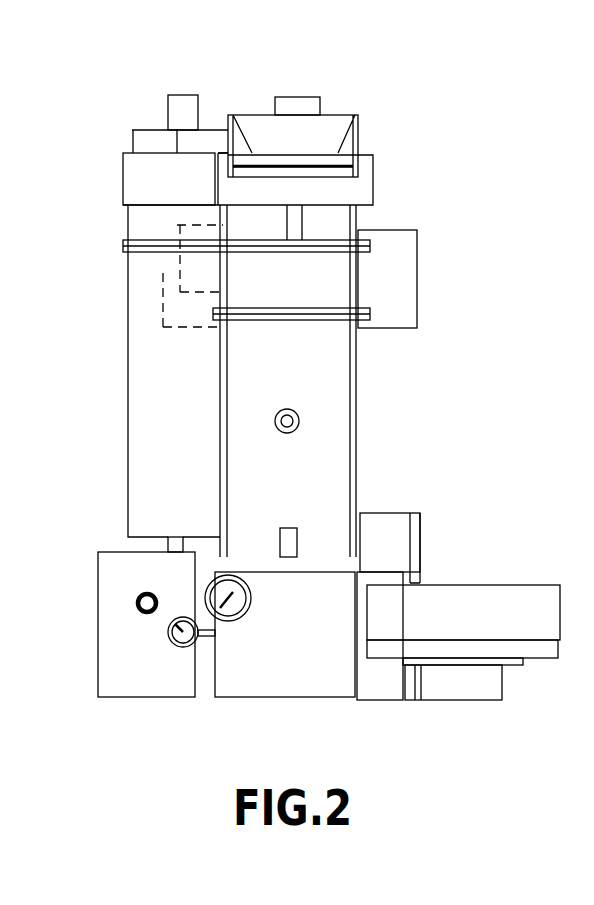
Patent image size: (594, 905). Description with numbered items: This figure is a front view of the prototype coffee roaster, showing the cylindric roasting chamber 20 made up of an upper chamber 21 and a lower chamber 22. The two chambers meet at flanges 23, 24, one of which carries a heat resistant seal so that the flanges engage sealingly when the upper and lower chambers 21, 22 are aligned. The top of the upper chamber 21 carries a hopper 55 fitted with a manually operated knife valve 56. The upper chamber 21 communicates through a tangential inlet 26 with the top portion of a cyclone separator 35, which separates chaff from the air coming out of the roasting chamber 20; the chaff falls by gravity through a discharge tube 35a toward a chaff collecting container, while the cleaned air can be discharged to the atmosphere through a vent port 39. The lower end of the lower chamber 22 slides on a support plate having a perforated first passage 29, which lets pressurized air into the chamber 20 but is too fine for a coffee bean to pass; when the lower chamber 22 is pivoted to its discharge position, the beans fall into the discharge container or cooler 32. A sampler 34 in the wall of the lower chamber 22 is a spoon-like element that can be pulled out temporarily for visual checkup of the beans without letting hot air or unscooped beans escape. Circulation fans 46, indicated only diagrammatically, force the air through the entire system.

The roasting chamber 20 is at (462, 394).
The upper chamber 21 is at (303, 296).
The lower chamber 22 is at (303, 385).
The flange 23 is at (332, 307).
The flange 24 is at (327, 320).
The tangential inlet 26 is at (150, 184).
The first passage 29 is at (293, 578).
The discharge container 32 is at (480, 628).
The sampler 34 is at (298, 427).
The cyclone separator 35 is at (189, 431).
The discharge tube 35a is at (127, 545).
The vent port 39 is at (182, 103).
The circulation fans 46 is at (417, 257).
The hopper 55 is at (323, 133).
The knife valve 56 is at (298, 220).